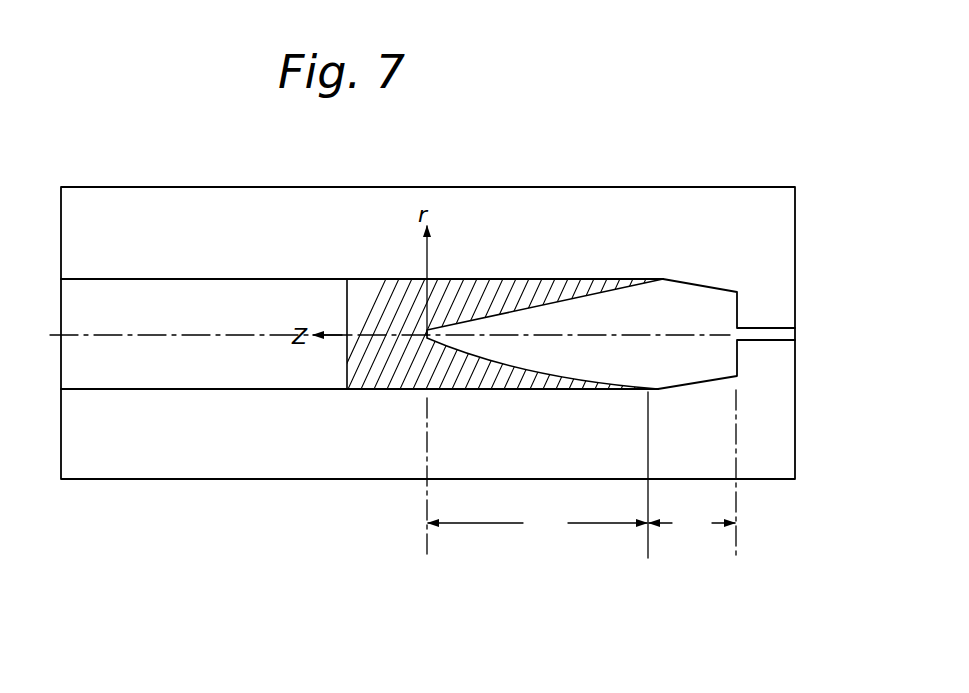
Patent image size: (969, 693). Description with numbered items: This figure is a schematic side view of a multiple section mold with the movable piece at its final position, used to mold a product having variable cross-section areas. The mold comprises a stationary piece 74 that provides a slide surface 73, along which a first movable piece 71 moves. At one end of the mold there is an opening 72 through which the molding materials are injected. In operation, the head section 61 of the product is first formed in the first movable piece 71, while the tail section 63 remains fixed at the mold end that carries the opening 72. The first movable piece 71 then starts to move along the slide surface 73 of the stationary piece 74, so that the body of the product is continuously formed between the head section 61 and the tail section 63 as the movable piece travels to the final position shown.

The head section 61 is at (537, 475).
The tail section 63 is at (692, 474).
The first movable piece 71 is at (463, 297).
The opening 72 is at (795, 337).
The slide surface 73 is at (202, 278).
The stationary piece 74 is at (186, 453).